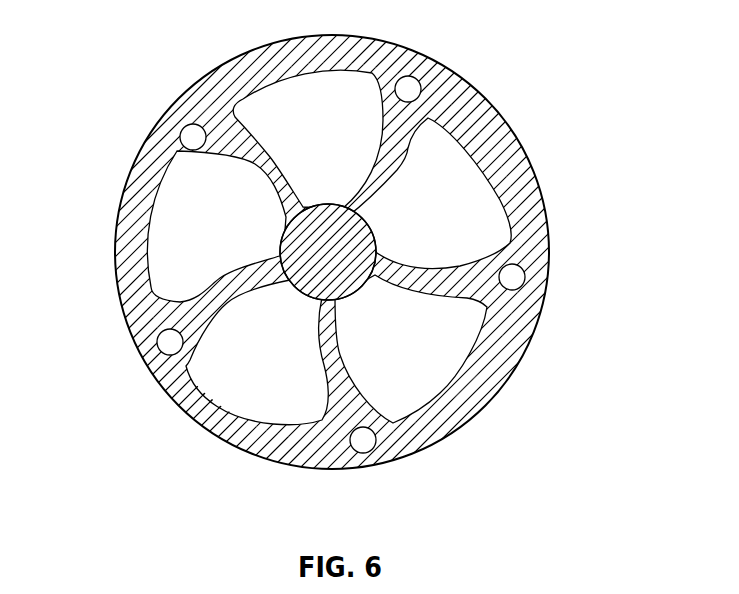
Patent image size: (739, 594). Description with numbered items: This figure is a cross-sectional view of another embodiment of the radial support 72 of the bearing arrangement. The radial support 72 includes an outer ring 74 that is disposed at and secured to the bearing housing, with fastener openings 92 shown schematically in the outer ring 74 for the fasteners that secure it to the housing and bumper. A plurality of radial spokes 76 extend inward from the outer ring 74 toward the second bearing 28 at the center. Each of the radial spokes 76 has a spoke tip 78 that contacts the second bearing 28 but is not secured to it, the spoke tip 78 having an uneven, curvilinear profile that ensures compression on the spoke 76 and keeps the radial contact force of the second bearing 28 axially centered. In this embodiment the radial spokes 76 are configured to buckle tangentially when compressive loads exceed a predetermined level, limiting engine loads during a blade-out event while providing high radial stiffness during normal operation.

The radial support 72 is at (104, 28).
The outer ring 74 is at (540, 218).
The radial spokes 76 is at (172, 130).
The spoke tip 78 is at (358, 292).
The fastener openings 92 is at (414, 77).
The second bearing 28 is at (287, 243).